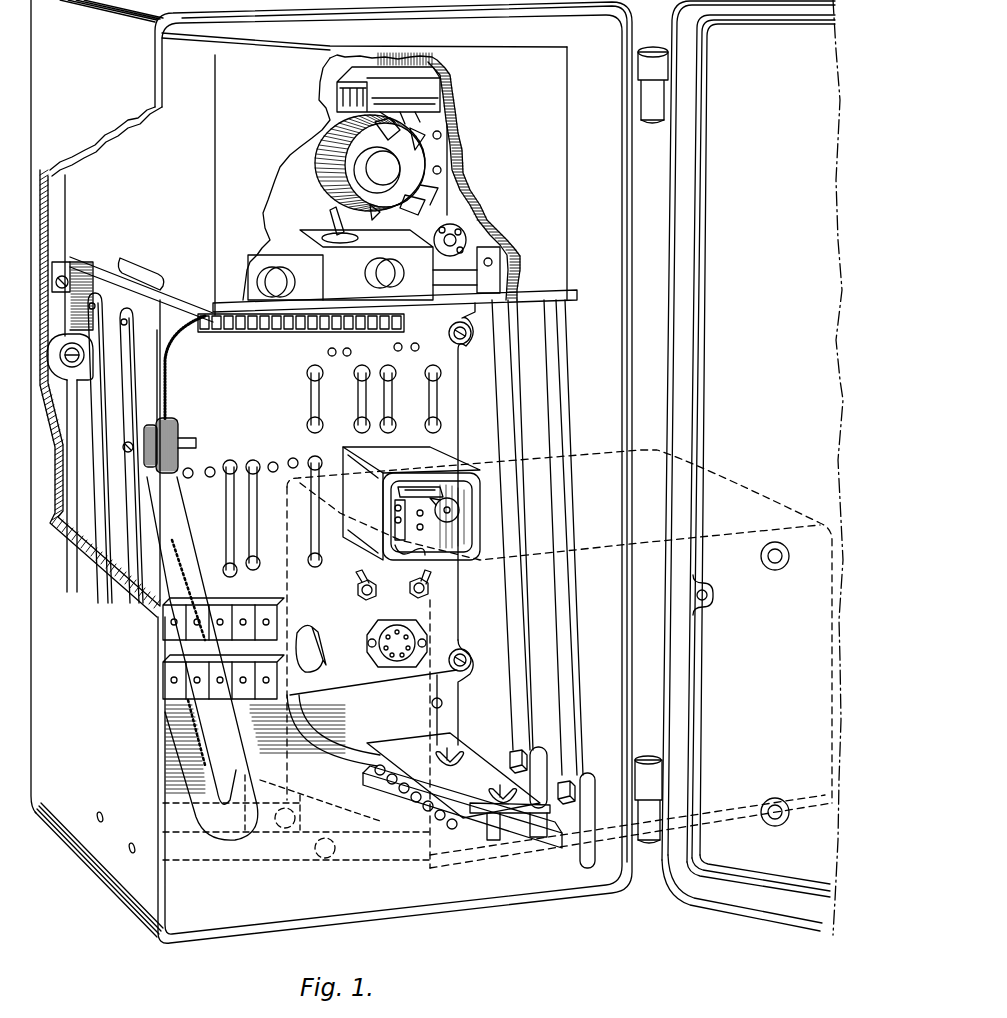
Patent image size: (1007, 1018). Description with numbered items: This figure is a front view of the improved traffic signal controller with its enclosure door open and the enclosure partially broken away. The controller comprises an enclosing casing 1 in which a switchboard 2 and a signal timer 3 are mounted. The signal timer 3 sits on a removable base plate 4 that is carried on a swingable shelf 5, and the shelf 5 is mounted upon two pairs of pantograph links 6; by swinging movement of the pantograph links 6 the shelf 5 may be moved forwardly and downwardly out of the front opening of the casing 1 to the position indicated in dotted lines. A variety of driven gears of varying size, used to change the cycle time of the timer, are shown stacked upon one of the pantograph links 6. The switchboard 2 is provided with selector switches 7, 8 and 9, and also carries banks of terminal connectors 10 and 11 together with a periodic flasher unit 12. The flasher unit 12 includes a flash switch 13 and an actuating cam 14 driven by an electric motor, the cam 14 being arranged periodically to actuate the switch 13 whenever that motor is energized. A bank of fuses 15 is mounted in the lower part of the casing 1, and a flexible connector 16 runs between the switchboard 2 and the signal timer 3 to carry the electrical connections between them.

The enclosing casing 1 is at (203, 942).
The switchboard 2 is at (364, 679).
The signal timer 3 is at (499, 168).
The removable base plate 4 is at (233, 327).
The swingable shelf 5 is at (112, 272).
The pantograph links 6 is at (503, 367).
The selector switch 7 is at (320, 668).
The selector switch 8 is at (357, 595).
The selector switch 9 is at (412, 593).
The bank of terminal connectors 10 is at (251, 652).
The bank of terminal connectors 11 is at (284, 327).
The periodic flasher unit 12 is at (407, 454).
The flash switch 13 is at (402, 493).
The actuating cam 14 is at (459, 505).
The bank of fuses 15 is at (469, 754).
The flexible connector 16 is at (180, 556).